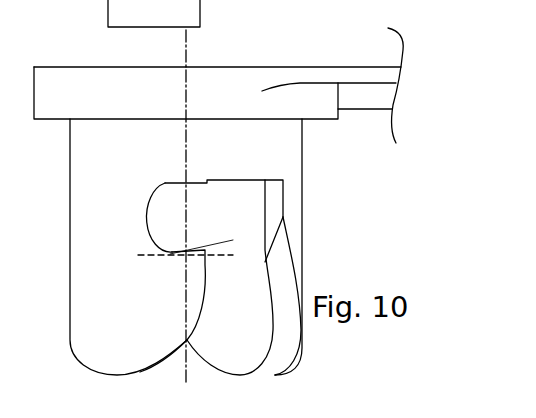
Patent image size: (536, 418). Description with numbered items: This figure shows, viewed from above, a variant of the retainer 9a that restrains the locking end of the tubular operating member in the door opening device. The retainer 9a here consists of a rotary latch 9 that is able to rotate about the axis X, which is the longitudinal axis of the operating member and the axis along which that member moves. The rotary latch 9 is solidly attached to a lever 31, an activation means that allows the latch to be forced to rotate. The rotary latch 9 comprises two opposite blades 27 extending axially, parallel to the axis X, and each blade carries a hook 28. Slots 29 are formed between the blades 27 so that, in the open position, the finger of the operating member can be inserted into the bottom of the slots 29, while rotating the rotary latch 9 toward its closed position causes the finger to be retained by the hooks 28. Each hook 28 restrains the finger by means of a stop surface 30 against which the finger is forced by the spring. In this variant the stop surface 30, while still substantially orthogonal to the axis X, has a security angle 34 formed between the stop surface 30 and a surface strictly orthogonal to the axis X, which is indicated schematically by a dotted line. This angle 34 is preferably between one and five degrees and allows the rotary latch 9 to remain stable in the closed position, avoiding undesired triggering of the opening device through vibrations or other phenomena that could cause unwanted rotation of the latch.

The rotary latch 9 is at (95, 65).
The retainer 9a is at (413, 243).
The axis of movement X is at (186, 57).
The lever 31 is at (378, 72).
The blades 27 is at (72, 254).
The hook 28 is at (150, 237).
The slots 29 is at (243, 190).
The stop surface 30 is at (188, 250).
The security angle 34 is at (228, 248).